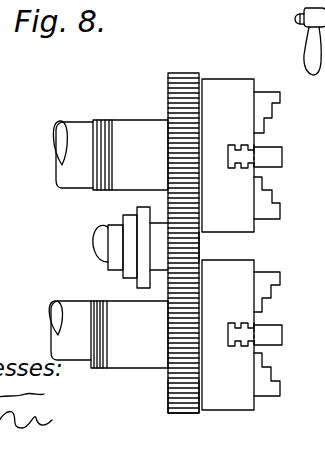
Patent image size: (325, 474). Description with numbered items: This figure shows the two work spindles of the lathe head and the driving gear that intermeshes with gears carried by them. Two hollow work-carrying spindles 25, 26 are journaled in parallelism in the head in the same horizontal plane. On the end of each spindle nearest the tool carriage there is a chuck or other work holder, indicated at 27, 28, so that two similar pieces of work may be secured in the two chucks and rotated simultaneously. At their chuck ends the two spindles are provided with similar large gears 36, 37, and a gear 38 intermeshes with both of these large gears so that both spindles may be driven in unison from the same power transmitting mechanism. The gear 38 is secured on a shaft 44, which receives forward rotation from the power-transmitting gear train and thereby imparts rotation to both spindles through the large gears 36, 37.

The work-carrying spindle 25 is at (108, 334).
The work-carrying spindle 26 is at (110, 155).
The chuck 27 is at (242, 335).
The chuck 28 is at (242, 155).
The large gear 36 is at (167, 396).
The large gear 37 is at (170, 74).
The gear 38 is at (197, 240).
The shaft 44 is at (94, 260).